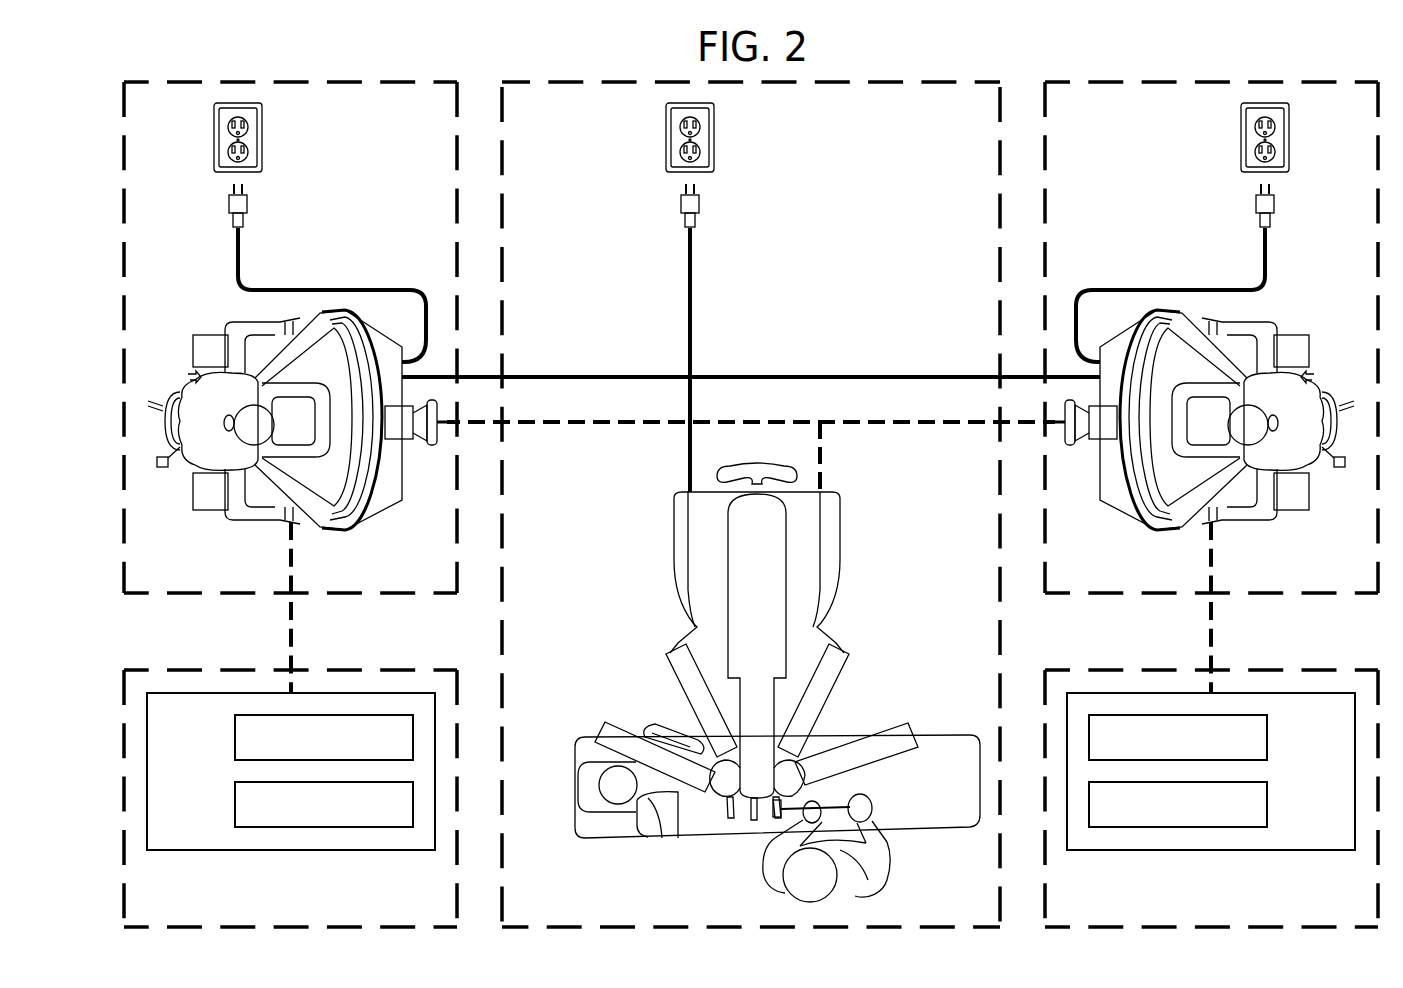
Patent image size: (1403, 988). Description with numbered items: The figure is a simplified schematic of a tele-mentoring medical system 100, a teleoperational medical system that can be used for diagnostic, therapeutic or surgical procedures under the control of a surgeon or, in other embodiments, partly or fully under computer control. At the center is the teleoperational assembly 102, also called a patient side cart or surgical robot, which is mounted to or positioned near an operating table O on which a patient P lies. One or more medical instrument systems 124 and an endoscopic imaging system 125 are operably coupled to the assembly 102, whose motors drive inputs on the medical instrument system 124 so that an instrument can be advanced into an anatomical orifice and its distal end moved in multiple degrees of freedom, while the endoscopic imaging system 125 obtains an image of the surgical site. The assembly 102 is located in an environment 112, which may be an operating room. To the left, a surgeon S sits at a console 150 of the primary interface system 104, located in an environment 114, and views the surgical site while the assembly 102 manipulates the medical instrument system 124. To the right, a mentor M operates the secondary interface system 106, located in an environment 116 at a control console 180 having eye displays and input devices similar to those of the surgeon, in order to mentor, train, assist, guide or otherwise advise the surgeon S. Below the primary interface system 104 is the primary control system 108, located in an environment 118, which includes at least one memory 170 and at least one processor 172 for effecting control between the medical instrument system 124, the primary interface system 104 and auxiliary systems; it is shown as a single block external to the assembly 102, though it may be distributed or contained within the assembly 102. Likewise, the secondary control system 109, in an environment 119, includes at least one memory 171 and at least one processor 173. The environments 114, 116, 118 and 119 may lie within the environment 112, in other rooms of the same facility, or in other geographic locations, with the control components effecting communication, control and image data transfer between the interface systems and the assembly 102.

The tele-mentoring medical system 100 is at (1252, 58).
The teleoperational assembly 102 is at (906, 516).
The primary interface system 104 is at (370, 235).
The secondary interface system 106 is at (1132, 235).
The primary control system 108 is at (278, 854).
The secondary control system 109 is at (1222, 854).
The environment 112 is at (497, 636).
The environment 114 is at (346, 597).
The environment 116 is at (1159, 597).
The environment 118 is at (236, 668).
The environment 119 is at (1264, 668).
The medical instrument system 124 is at (806, 810).
The endoscopic imaging system 125 is at (756, 820).
The first surgeon console 150 is at (390, 524).
The memory 170 is at (234, 803).
The memory 171 is at (1272, 803).
The processor 172 is at (234, 737).
The processor 173 is at (1272, 737).
The control console 180 is at (1112, 524).
The surgeon S is at (181, 390).
The mentor M is at (1323, 390).
The patient P is at (600, 815).
The operating table O is at (934, 838).